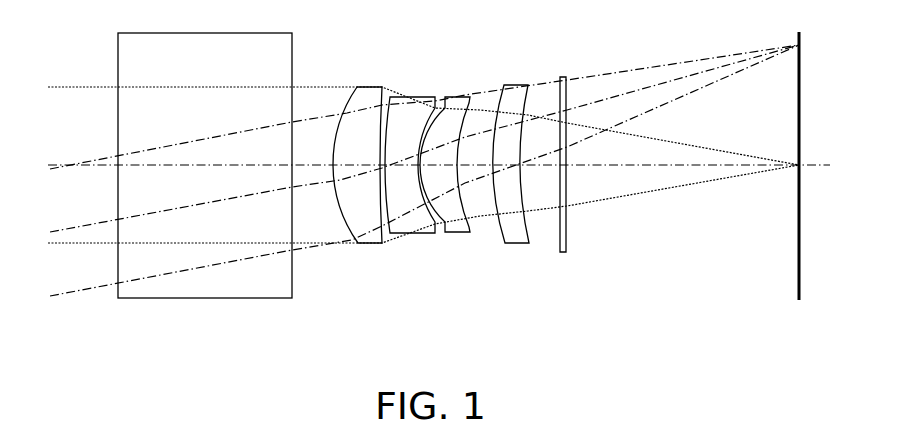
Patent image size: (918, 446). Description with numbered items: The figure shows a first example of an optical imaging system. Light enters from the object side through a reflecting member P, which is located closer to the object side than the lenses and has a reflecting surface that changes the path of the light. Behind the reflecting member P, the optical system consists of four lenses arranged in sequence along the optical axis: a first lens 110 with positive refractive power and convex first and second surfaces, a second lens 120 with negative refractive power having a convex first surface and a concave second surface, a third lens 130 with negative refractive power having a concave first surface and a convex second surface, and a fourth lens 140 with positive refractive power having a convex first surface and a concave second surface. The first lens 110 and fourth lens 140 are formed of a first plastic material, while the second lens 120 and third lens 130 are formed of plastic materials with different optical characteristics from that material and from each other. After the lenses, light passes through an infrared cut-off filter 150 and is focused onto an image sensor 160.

The reflecting member P is at (199, 291).
The first lens 110 is at (372, 244).
The second lens 120 is at (413, 240).
The third lens 130 is at (462, 240).
The fourth lens 140 is at (515, 247).
The infrared cut-off filter 150 is at (563, 253).
The image sensor 160 is at (798, 268).